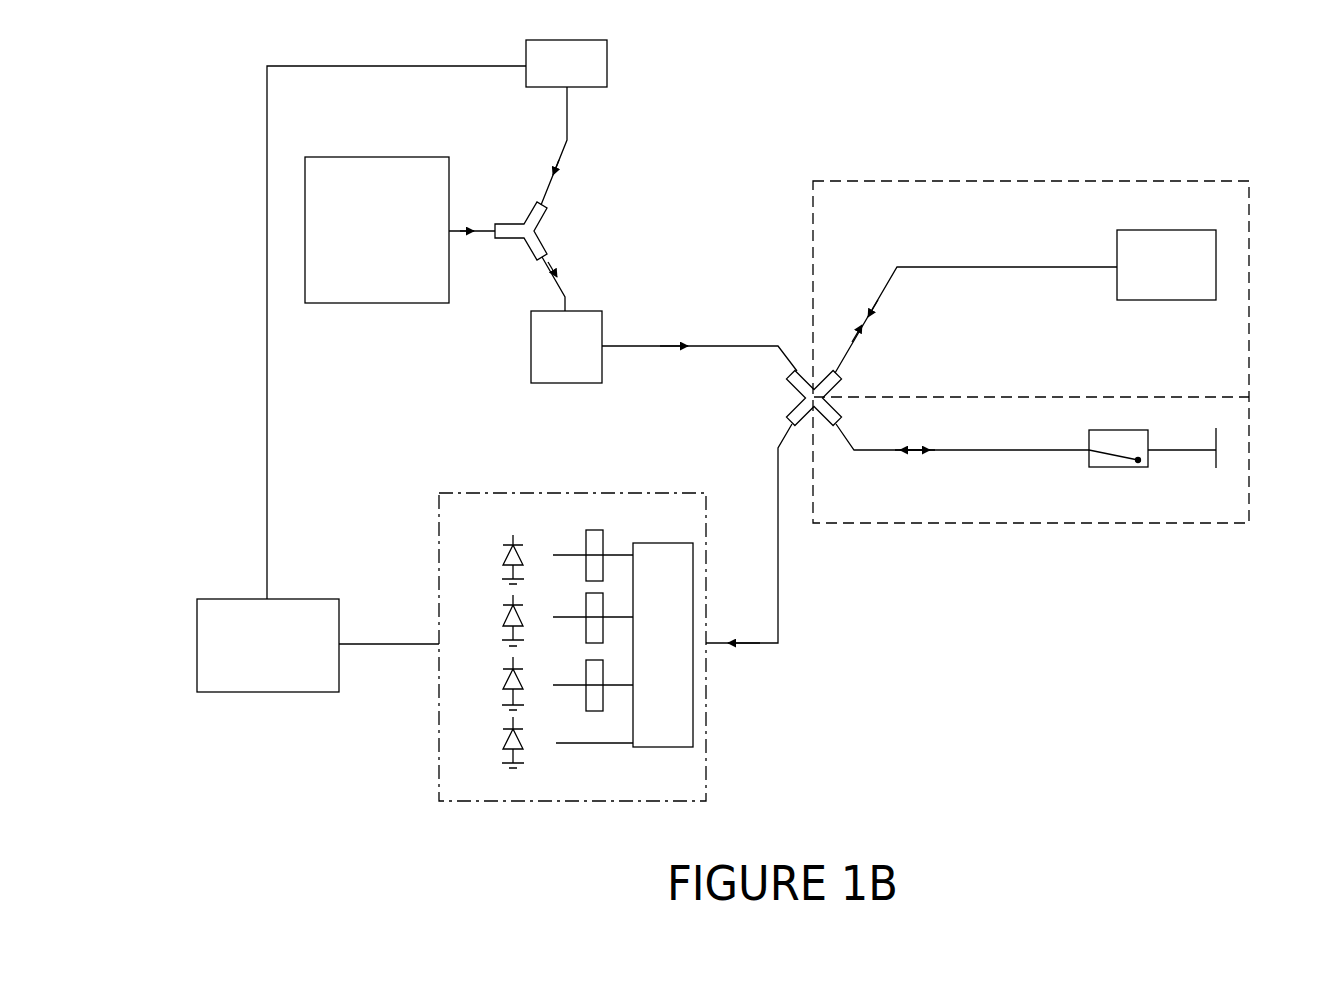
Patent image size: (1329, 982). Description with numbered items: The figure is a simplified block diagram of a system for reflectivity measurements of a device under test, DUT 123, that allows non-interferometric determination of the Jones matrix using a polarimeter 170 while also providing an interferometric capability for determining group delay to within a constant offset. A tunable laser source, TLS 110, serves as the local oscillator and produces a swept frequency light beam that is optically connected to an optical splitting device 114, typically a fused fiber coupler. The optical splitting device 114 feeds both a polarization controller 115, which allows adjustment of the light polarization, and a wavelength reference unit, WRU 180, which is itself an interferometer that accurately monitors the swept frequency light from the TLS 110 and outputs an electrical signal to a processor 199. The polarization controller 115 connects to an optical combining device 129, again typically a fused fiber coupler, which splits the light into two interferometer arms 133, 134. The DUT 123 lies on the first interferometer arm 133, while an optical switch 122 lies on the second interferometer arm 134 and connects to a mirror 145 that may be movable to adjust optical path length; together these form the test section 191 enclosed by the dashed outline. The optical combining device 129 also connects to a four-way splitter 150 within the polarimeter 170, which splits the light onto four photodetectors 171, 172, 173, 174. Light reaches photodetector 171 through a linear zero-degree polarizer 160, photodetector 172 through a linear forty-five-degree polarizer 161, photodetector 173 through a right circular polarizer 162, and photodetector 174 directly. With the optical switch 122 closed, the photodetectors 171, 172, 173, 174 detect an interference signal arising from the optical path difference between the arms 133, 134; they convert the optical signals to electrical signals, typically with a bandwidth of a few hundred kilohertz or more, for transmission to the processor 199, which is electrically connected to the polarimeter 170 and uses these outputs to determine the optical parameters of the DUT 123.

The tunable laser source 110 is at (397, 165).
The optical splitting device 114 is at (534, 216).
The polarization controller 115 is at (592, 326).
The optical switch 122 is at (1095, 457).
The device under test 123 is at (1122, 287).
The optical combining device 129 is at (830, 387).
The interferometer arm 133 is at (1238, 209).
The interferometer arm 134 is at (1240, 510).
The mirror 145 is at (1218, 442).
The four-way splitter 150 is at (684, 546).
The linear 0° polarizer 160 is at (586, 541).
The linear 45° polarizer 161 is at (586, 604).
The right circular polarizer 162 is at (586, 671).
The polarimeter 170 is at (648, 480).
The photodetector 171 is at (504, 556).
The photodetector 172 is at (504, 616).
The photodetector 173 is at (504, 680).
The photodetector 174 is at (504, 740).
The wavelength reference unit 180 is at (607, 80).
The test section 191 is at (1046, 170).
The processor 199 is at (291, 610).